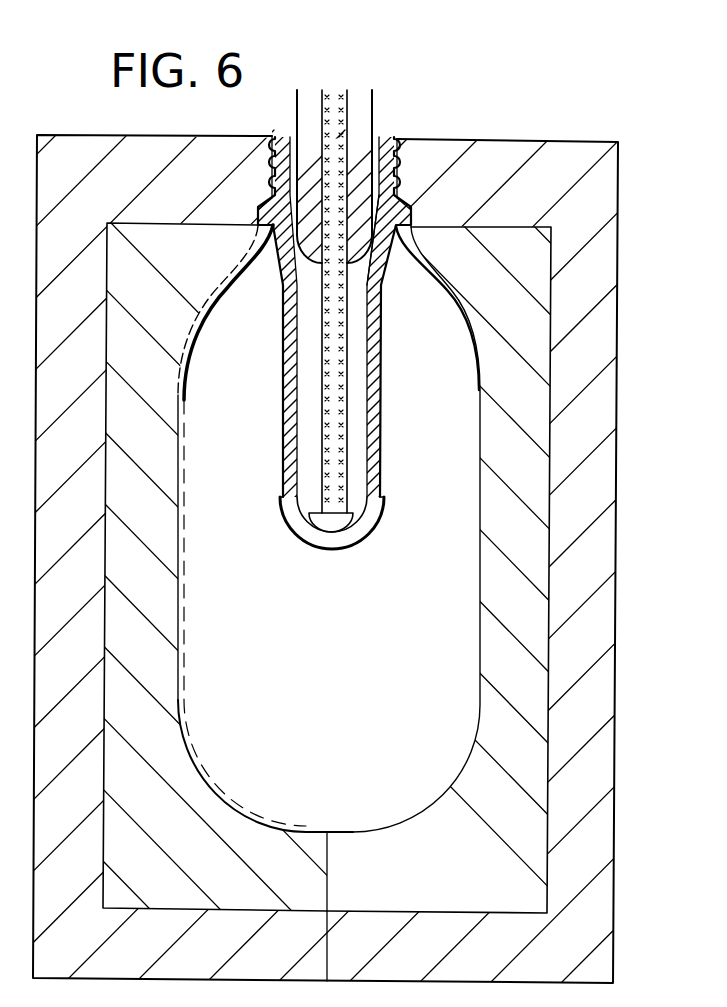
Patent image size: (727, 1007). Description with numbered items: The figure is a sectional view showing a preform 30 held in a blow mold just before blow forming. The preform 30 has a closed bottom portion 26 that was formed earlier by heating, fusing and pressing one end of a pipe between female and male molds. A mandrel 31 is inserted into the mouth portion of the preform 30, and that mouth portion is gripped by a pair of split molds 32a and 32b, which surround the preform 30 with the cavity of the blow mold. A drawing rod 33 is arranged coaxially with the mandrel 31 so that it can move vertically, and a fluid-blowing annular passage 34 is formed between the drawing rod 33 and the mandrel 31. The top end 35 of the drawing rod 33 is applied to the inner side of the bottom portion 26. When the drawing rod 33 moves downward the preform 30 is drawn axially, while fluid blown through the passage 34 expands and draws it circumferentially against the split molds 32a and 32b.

The bottom portion 26 is at (340, 553).
The preform 30 is at (382, 414).
The mandrel 31 is at (372, 121).
The split mold 32a is at (537, 492).
The split mold 32b is at (163, 489).
The drawing rod 33 is at (334, 96).
The fluid-blowing annular passage 34 is at (347, 270).
The top end of the drawing rod 35 is at (349, 521).